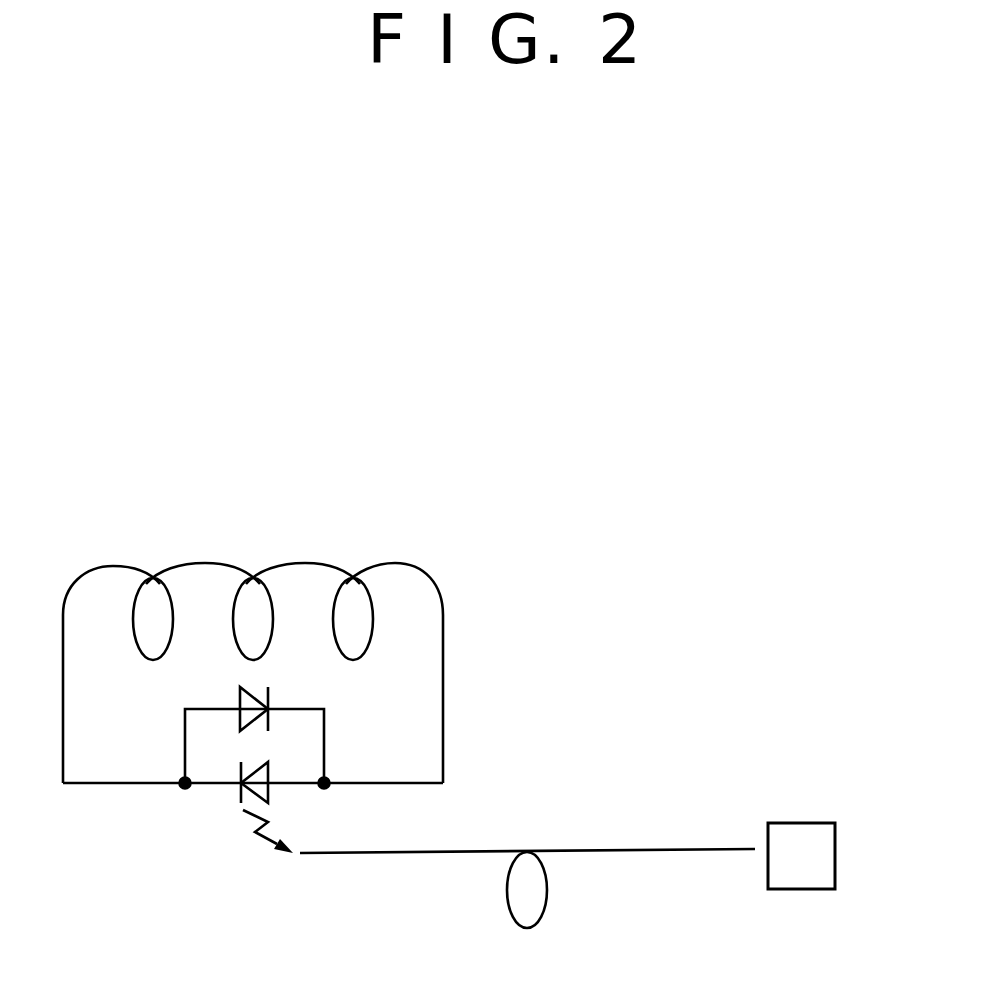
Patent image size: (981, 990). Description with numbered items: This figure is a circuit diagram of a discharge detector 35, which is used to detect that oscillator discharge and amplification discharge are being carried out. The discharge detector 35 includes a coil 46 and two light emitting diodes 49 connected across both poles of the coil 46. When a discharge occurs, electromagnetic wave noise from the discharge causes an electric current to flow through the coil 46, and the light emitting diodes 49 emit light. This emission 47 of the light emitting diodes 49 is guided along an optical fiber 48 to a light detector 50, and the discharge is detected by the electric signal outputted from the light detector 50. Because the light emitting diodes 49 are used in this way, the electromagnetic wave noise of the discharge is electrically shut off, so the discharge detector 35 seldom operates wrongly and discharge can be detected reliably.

The discharge detector 35 is at (574, 602).
The coil 46 is at (302, 562).
The emission 47 is at (255, 840).
The optical fiber 48 is at (428, 853).
The light emitting diode 49 is at (268, 692).
The light detector 50 is at (795, 889).